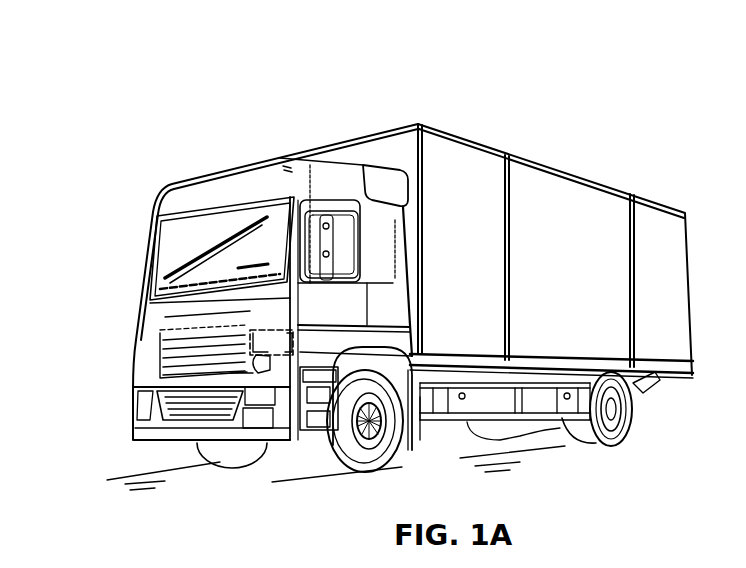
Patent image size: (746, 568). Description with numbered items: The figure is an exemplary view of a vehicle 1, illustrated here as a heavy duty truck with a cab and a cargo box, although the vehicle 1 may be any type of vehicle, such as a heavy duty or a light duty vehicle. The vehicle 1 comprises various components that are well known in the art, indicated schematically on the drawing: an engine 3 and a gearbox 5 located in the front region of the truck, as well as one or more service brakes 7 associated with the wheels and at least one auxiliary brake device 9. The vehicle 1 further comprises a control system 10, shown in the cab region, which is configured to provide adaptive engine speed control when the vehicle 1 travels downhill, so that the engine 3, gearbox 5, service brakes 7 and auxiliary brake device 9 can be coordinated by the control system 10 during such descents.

The vehicle 1 is at (436, 113).
The engine 3 is at (155, 340).
The gearbox 5 is at (268, 348).
The service brake 7 is at (398, 432).
The auxiliary brake device 9 is at (253, 372).
The control system 10 is at (143, 300).